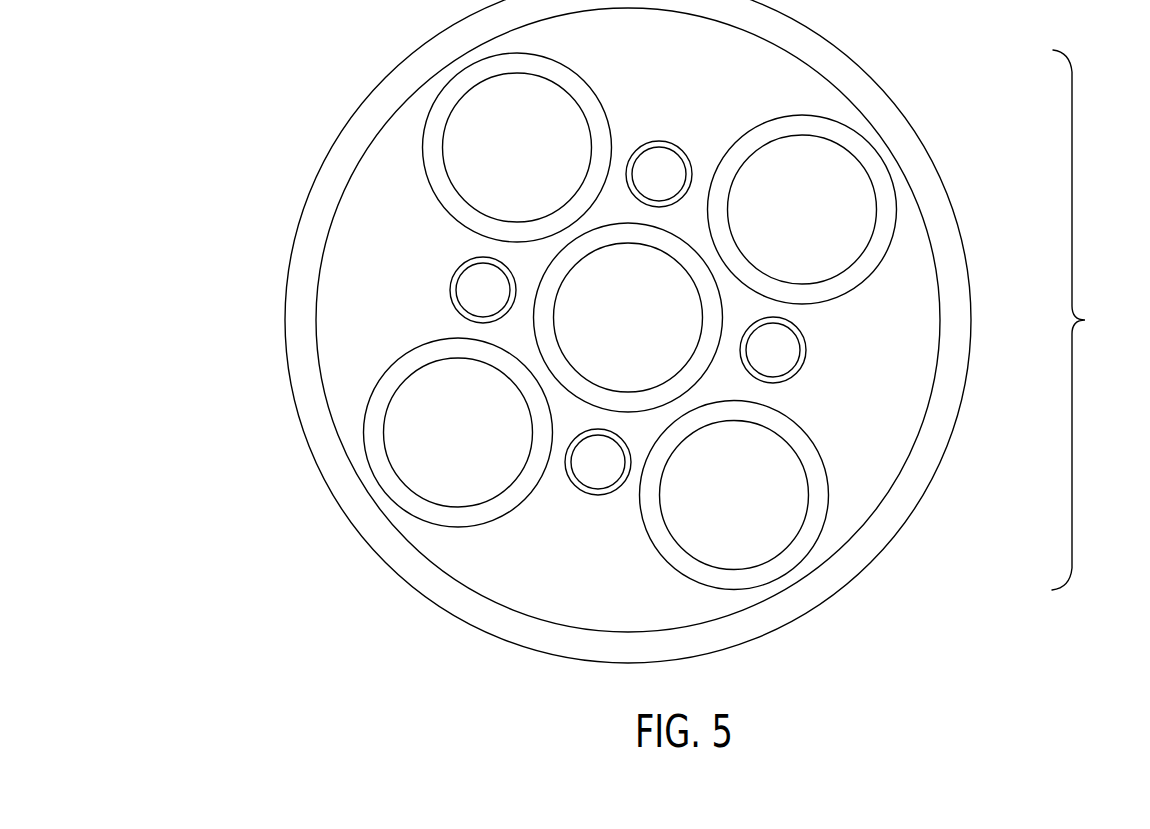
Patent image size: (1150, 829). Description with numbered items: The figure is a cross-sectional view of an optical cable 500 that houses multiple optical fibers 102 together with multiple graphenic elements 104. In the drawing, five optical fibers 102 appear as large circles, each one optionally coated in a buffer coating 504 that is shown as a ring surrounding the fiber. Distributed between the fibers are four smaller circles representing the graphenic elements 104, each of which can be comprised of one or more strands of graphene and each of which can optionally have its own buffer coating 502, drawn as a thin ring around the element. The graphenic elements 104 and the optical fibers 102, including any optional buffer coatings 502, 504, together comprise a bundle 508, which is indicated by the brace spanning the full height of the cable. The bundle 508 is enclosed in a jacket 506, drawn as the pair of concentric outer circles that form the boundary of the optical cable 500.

The optical cable 500 is at (201, 77).
The optical fiber 102 is at (528, 158).
The graphenic element 104 is at (467, 297).
The buffer coating 502 is at (462, 270).
The buffer coating 504 is at (440, 185).
The jacket 506 is at (298, 349).
The bundle 508 is at (1085, 320).